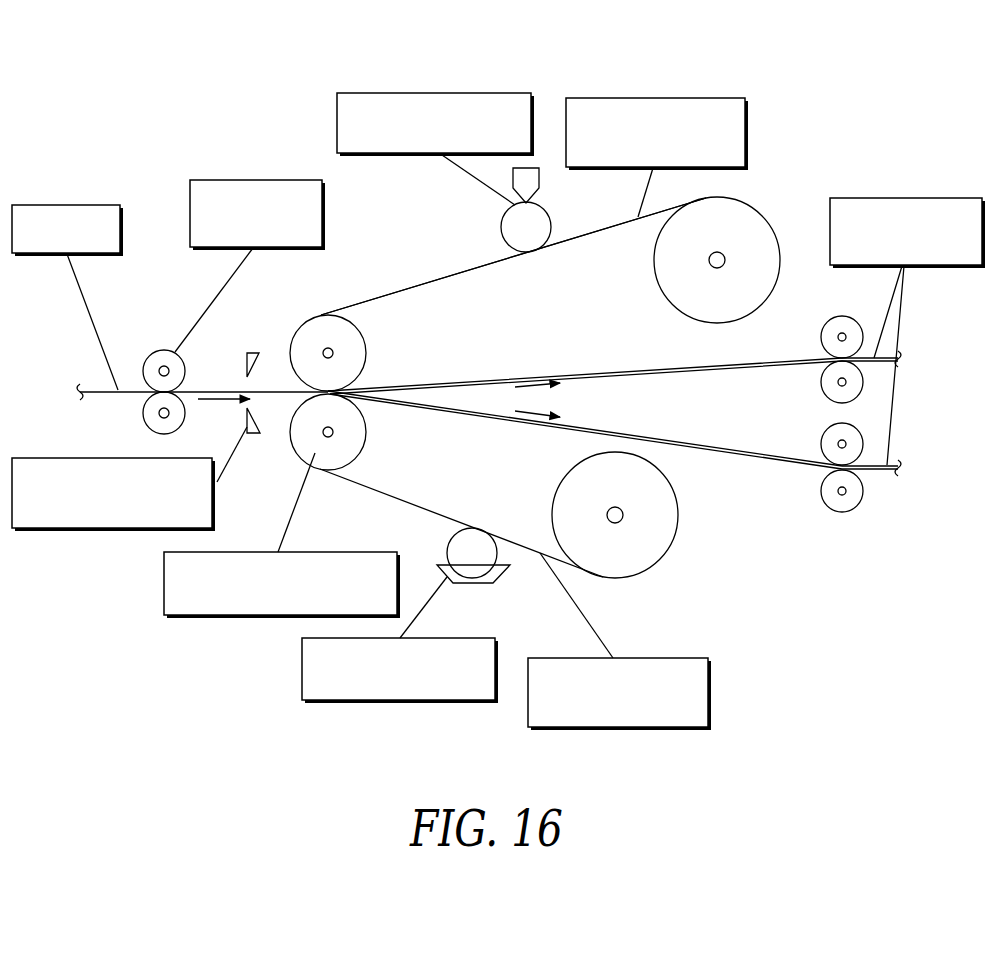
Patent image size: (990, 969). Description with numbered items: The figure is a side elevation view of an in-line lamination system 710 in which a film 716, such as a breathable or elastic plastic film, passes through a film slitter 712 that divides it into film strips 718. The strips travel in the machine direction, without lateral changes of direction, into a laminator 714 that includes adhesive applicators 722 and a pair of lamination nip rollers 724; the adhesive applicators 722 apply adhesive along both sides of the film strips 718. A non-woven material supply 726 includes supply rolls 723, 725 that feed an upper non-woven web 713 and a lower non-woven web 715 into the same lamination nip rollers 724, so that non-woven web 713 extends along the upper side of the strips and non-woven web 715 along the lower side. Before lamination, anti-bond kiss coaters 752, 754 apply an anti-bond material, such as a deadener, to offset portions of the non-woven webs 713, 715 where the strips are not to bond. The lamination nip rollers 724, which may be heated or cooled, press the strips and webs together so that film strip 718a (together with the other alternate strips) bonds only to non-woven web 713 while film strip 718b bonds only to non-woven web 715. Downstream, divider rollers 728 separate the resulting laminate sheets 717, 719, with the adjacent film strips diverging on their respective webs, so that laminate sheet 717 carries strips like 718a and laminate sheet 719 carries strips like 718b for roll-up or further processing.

The in-line lamination system 710 is at (97, 128).
The film slitter 712 is at (265, 180).
The non-woven web 713 is at (641, 98).
The laminator 714 is at (347, 288).
The non-woven web 715 is at (709, 693).
The film 716 is at (83, 205).
The laminate sheet 717 is at (653, 357).
The film strips 718 is at (223, 386).
The film strip 718a is at (600, 380).
The film strip 718b is at (500, 414).
The laminate sheet 719 is at (695, 438).
The adhesive applicators 722 is at (82, 458).
The supply roll 723 is at (757, 200).
The lamination nip rollers 724 is at (202, 617).
The supply roll 725 is at (667, 558).
The non-woven material supply 726 is at (788, 233).
The divider rollers 728 is at (818, 318).
The anti-bond kiss coater 752 is at (410, 93).
The anti-bond kiss coater 754 is at (400, 702).